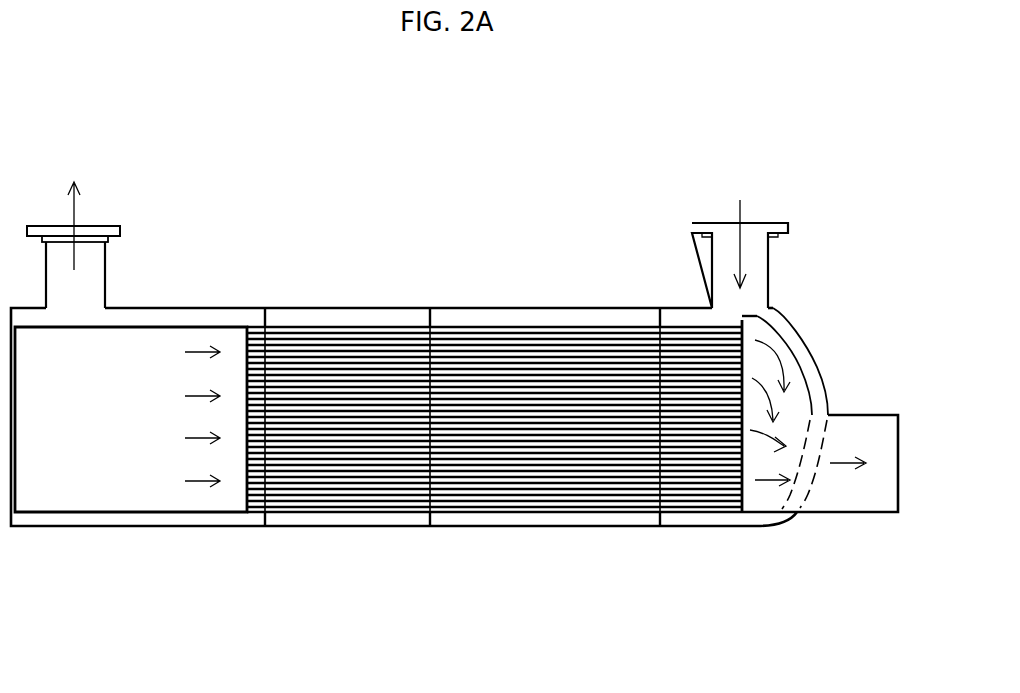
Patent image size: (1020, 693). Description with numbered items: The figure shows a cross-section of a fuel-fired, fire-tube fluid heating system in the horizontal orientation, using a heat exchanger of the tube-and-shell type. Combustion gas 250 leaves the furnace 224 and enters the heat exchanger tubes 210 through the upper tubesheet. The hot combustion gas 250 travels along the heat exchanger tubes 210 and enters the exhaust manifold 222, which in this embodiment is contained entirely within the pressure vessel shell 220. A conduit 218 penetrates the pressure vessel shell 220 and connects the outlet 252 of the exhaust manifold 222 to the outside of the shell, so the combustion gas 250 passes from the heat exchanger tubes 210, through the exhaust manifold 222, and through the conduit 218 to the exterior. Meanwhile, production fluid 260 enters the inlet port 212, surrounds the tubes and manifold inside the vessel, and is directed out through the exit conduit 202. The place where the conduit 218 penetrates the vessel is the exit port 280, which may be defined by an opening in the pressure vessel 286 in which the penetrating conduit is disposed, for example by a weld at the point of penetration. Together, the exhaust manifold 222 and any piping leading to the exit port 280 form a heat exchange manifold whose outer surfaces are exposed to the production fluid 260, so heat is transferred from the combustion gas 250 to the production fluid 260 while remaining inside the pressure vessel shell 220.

The exit conduit 202 is at (105, 251).
The heat exchanger tubes 210 is at (464, 326).
The inlet port 212 is at (712, 253).
The conduit 218 is at (853, 494).
The pressure vessel shell 220 is at (375, 308).
The exhaust manifold 222 is at (757, 493).
The furnace 224 is at (105, 492).
The combustion gas 250 is at (202, 352).
The outlet 252 is at (898, 438).
The production fluid 260 is at (78, 208).
The exit port 280 is at (830, 410).
The pressure vessel opening 286 is at (810, 500).